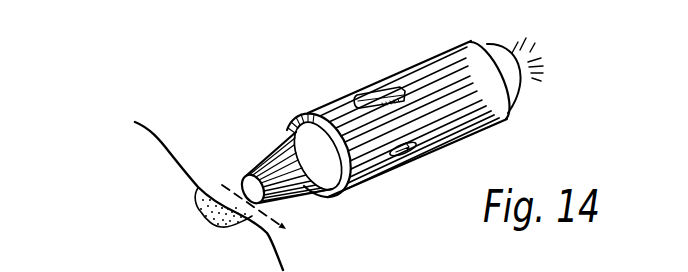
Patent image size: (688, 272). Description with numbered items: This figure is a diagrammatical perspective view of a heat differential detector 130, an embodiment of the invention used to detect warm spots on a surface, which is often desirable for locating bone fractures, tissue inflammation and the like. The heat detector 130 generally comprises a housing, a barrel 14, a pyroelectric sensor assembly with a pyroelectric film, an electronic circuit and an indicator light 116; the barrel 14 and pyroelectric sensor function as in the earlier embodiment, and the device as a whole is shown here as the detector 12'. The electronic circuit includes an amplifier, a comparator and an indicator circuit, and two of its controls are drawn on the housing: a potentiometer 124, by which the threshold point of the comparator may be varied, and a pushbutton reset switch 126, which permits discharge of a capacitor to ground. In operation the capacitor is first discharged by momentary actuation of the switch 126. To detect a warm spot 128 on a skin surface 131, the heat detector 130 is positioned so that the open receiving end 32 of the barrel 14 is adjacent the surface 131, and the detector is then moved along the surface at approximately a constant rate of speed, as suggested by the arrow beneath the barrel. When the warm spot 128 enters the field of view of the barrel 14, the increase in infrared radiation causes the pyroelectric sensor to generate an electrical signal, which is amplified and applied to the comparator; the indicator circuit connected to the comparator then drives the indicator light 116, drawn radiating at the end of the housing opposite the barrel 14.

The hand-held device 12' is at (388, 128).
The barrel 14 is at (292, 188).
The open receiving end 32 is at (245, 187).
The indicator light 116 is at (511, 72).
The potentiometer 124 is at (419, 154).
The pushbutton reset switch 126 is at (378, 92).
The warm spot 128 is at (197, 197).
The heat differential detector 130 is at (413, 63).
The skin surface 131 is at (153, 150).